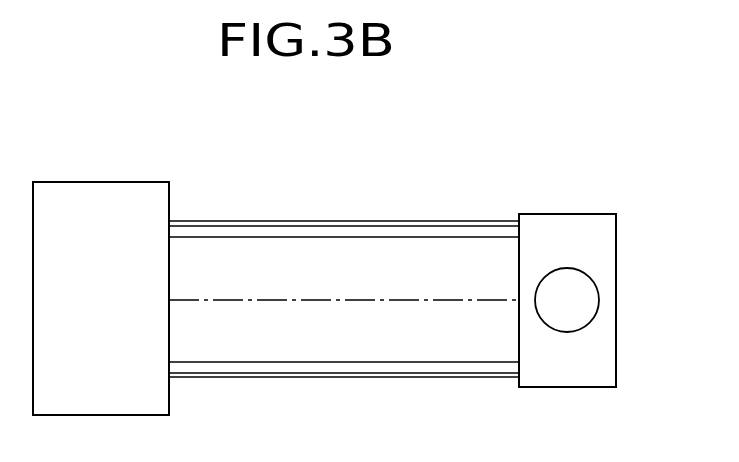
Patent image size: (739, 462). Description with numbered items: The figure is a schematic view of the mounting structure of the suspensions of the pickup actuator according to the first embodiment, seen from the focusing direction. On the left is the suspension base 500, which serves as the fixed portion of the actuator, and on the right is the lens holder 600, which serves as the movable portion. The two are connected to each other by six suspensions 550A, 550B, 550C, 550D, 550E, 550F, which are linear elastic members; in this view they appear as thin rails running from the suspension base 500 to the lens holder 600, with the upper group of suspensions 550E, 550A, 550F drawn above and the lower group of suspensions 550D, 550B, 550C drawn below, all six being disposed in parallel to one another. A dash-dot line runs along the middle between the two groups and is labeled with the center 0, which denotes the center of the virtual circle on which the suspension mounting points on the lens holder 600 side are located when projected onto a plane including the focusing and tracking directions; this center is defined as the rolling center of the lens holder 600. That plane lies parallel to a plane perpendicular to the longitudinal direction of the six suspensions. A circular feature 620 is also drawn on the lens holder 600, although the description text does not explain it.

The suspension base 500 is at (100, 195).
The lens holder 600 is at (600, 244).
The detection window 620 is at (578, 317).
The suspension 550A is at (326, 226).
The suspension 550B is at (316, 375).
The suspension 550C is at (387, 378).
The suspension 550D is at (257, 363).
The suspension 550E is at (247, 236).
The suspension 550F is at (450, 200).
The rolling center 0 is at (292, 300).